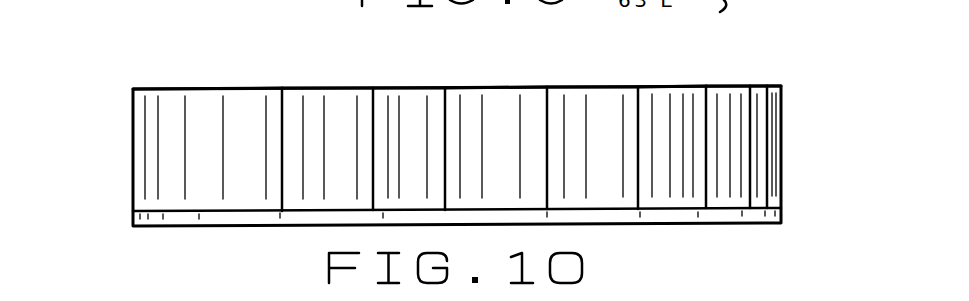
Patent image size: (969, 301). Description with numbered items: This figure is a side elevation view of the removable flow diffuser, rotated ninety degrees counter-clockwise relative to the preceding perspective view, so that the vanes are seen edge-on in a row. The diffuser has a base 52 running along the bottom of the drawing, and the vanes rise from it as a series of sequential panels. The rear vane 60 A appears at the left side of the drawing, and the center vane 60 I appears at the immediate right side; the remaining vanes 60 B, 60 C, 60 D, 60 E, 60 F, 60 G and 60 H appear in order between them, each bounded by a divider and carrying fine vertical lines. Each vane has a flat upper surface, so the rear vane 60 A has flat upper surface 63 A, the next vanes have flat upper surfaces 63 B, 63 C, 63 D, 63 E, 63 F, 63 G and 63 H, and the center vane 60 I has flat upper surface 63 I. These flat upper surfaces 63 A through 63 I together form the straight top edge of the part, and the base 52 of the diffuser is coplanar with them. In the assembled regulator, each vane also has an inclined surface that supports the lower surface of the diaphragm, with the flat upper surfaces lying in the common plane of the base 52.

The base 52 is at (232, 226).
The rear vane 60 A is at (198, 138).
The vane 60 B is at (335, 123).
The vane 60 C is at (409, 113).
The vane 60 D is at (513, 105).
The vane 60 E is at (575, 139).
The vane 60 F is at (677, 170).
The vane 60 G is at (728, 178).
The vane 60 H is at (757, 197).
The center vane 60 I is at (777, 140).
The flat upper surface 63 A is at (203, 89).
The flat upper surface 63 B is at (350, 88).
The flat upper surface 63 C is at (424, 88).
The flat upper surface 63 D is at (528, 88).
The flat upper surface 63 E is at (628, 87).
The flat upper surface 63 F is at (678, 86).
The flat upper surface 63 G is at (723, 86).
The flat upper surface 63 H is at (757, 86).
The flat upper surface 63 I is at (775, 86).